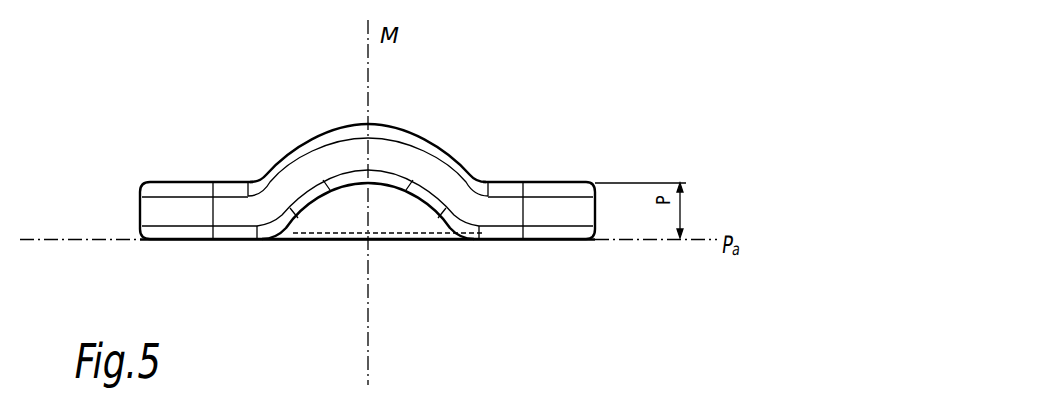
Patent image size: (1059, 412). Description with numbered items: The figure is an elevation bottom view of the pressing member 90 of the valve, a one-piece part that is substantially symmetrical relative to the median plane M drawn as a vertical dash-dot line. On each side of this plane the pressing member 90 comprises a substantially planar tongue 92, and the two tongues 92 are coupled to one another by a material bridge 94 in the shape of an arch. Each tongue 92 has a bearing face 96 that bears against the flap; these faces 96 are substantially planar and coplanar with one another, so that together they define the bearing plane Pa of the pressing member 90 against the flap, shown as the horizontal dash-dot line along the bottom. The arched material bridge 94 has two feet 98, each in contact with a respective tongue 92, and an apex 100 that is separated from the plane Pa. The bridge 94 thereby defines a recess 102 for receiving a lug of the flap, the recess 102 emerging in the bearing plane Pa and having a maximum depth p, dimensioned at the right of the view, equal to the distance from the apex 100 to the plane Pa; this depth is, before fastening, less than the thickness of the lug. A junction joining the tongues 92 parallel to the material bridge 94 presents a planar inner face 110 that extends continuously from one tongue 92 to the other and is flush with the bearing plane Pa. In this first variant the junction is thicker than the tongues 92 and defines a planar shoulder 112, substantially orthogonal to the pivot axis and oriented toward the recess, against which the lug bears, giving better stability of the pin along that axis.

The pressing member 90 is at (324, 181).
The tongue 92 is at (204, 176).
The material bridge 94 is at (410, 127).
The bearing face 96 is at (192, 243).
The foot 98 is at (257, 213).
The apex 100 is at (342, 160).
The recess 102 is at (347, 215).
The planar inner face 110 is at (430, 240).
The planar shoulder 112 is at (391, 213).